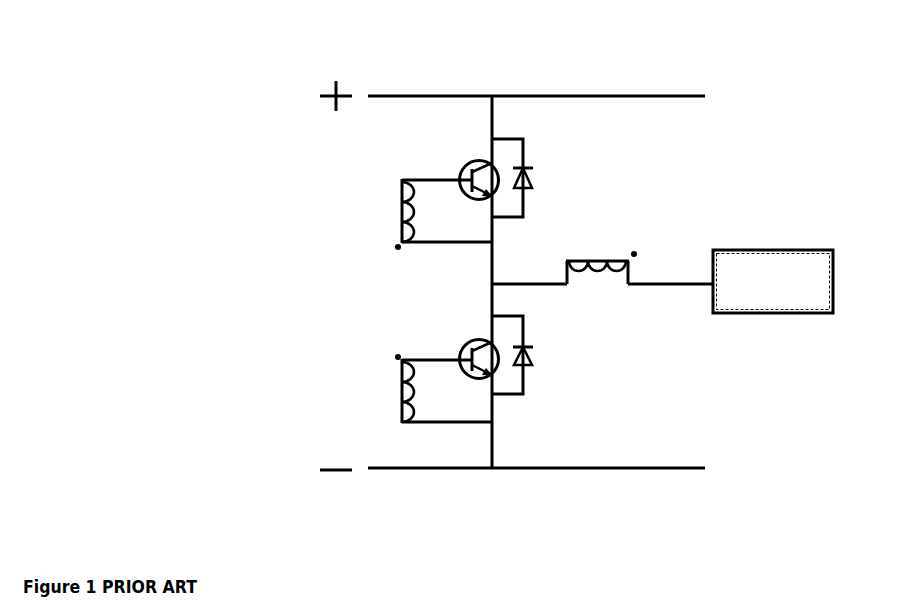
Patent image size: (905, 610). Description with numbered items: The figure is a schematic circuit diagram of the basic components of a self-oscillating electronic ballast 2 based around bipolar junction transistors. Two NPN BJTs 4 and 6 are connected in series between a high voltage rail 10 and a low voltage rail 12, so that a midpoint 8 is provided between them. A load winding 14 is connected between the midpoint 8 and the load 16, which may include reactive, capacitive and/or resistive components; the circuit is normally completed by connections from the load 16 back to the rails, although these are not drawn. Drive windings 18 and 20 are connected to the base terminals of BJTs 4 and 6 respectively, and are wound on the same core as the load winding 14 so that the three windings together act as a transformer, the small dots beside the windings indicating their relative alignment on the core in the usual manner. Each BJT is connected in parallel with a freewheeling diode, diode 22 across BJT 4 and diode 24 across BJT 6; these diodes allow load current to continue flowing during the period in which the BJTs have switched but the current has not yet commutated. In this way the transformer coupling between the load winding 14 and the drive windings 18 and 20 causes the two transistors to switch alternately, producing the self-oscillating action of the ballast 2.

The self-oscillating electronic ballast 2 is at (248, 63).
The NPN BJT 4 is at (468, 163).
The NPN BJT 6 is at (468, 378).
The midpoint 8 is at (527, 284).
The voltage rail 10 is at (395, 96).
The voltage rail 12 is at (378, 470).
The load winding 14 is at (604, 243).
The load 16 is at (768, 249).
The drive winding 18 is at (387, 201).
The drive winding 20 is at (387, 390).
The freewheeling diode 22 is at (545, 161).
The freewheeling diode 24 is at (548, 369).